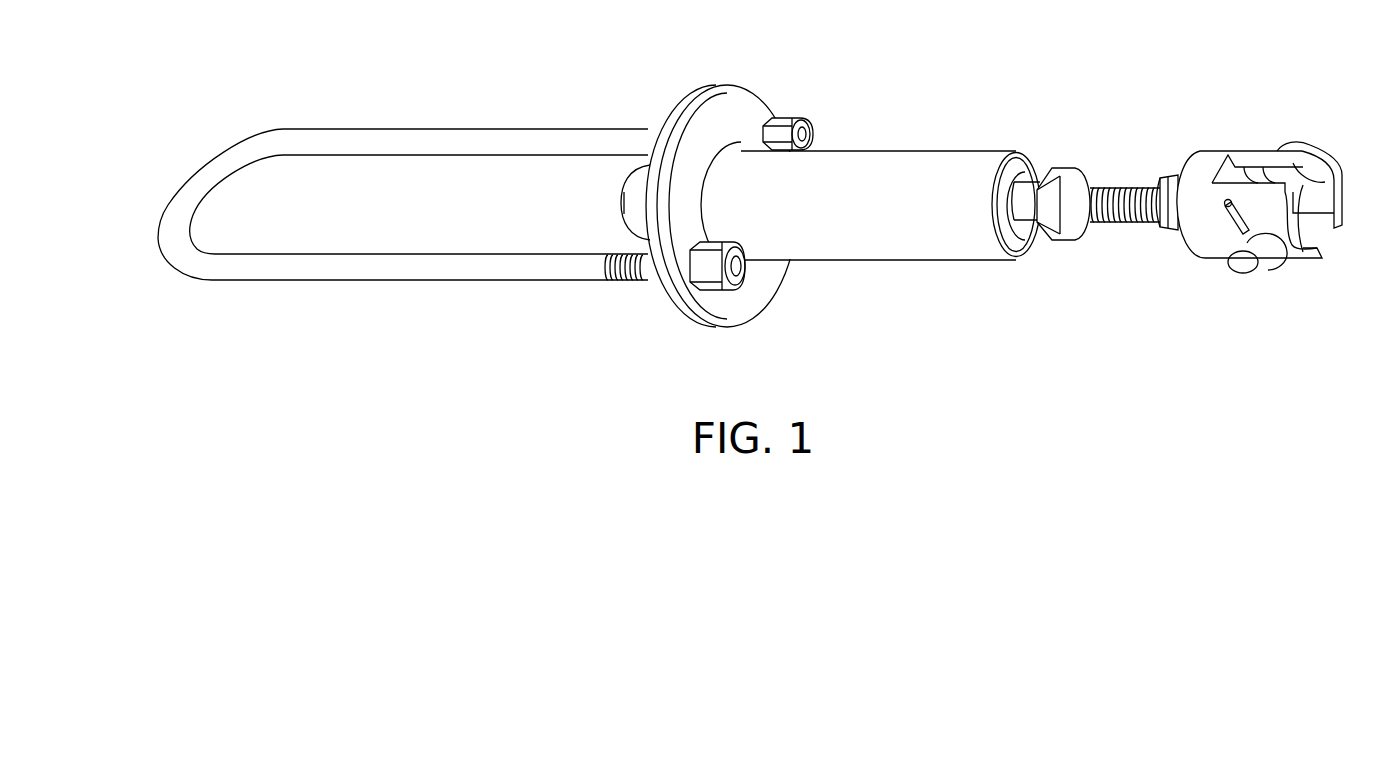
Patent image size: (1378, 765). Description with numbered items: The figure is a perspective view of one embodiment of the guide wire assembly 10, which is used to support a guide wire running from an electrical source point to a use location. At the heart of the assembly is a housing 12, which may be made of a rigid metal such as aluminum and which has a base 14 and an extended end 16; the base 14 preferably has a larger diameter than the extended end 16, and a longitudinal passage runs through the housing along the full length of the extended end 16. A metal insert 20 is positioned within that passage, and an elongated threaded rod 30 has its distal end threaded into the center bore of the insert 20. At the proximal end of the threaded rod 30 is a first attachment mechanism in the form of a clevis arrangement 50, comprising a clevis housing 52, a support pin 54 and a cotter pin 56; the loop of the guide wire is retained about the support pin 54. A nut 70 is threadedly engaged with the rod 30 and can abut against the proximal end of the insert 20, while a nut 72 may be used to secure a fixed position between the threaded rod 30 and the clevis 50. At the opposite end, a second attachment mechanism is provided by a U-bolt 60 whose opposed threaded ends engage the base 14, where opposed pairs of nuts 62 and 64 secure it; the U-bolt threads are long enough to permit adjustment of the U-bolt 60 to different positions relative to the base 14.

The guide wire assembly 10 is at (913, 92).
The housing 12 is at (886, 266).
The base 14 is at (722, 83).
The extended end 16 is at (922, 153).
The insert 20 is at (1023, 218).
The threaded rod 30 is at (1125, 182).
The clevis arrangement 50 is at (1248, 142).
The clevis housing 52 is at (1212, 247).
The support pin 54 is at (1298, 183).
The cotter pin 56 is at (1280, 255).
The U-bolt 60 is at (454, 128).
The nuts 62 is at (790, 118).
The nuts 64 is at (660, 287).
The nut 70 is at (1063, 170).
The nut 72 is at (1160, 226).